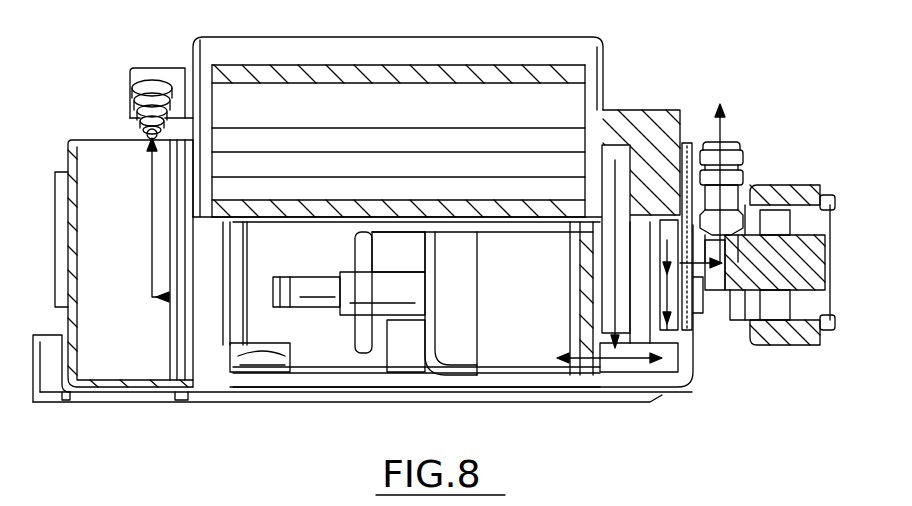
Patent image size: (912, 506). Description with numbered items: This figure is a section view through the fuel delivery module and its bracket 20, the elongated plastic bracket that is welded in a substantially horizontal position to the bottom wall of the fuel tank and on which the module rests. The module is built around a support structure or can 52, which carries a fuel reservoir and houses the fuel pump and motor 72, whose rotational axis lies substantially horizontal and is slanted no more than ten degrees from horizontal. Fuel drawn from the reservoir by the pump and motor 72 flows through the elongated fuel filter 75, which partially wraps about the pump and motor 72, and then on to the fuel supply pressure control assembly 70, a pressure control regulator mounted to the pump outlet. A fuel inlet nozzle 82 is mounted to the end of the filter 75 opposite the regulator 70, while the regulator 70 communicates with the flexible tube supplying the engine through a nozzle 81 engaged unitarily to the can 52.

The bracket 20 is at (48, 397).
The can 52 is at (73, 320).
The fuel supply pressure control assembly 70 is at (775, 200).
The fuel pump and motor 72 is at (360, 352).
The fuel filter 75 is at (572, 98).
The nozzle 81 is at (735, 160).
The fuel inlet nozzle 82 is at (153, 68).